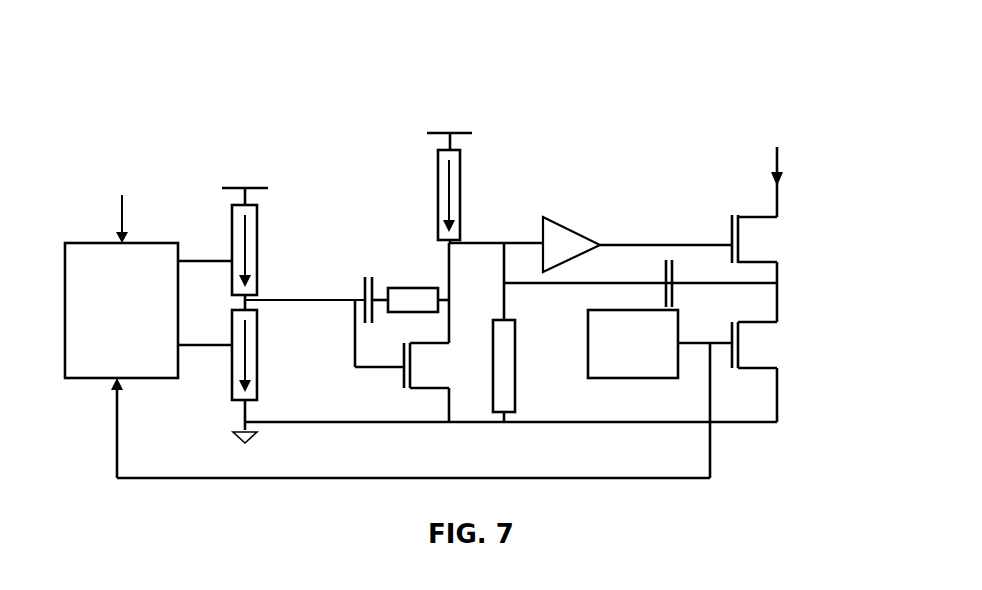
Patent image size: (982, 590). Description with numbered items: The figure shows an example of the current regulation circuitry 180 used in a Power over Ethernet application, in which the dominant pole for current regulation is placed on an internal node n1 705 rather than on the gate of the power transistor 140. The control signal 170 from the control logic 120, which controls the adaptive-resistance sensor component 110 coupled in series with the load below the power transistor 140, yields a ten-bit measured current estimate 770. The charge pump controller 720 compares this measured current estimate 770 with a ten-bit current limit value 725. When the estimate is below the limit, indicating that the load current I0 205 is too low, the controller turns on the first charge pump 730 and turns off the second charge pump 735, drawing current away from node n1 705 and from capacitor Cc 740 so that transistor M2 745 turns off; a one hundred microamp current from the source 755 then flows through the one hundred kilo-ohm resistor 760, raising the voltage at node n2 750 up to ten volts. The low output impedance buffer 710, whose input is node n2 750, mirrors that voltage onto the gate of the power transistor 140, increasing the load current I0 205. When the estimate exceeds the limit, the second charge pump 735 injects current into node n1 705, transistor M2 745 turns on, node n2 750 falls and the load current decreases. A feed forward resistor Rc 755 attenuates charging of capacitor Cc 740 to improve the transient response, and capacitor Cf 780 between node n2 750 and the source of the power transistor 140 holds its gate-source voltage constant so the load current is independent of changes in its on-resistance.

The current regulation circuitry 180 is at (702, 72).
The load current I0 205 is at (768, 158).
The power transistor 140 is at (765, 225).
The adaptive-resistance sensor component 110 is at (785, 360).
The control signal 170 is at (687, 358).
The control logic 120 is at (633, 344).
The capacitor Cf 780 is at (674, 258).
The low output impedance buffer 710 is at (565, 242).
The node n2 750 is at (497, 242).
The 100 kOhm resistor 760 is at (517, 340).
The node n1 705 is at (328, 285).
The capacitor Cc 740 is at (380, 275).
The feed forward resistor Rc 755 is at (413, 305).
The transistor M2 745 is at (398, 375).
The second charge pump 735 is at (245, 238).
The first charge pump 730 is at (230, 357).
The charge pump controller 720 is at (80, 357).
The current limit value Ilim 9:0 725 is at (145, 158).
The measured current estimate I 9:0 770 is at (298, 475).